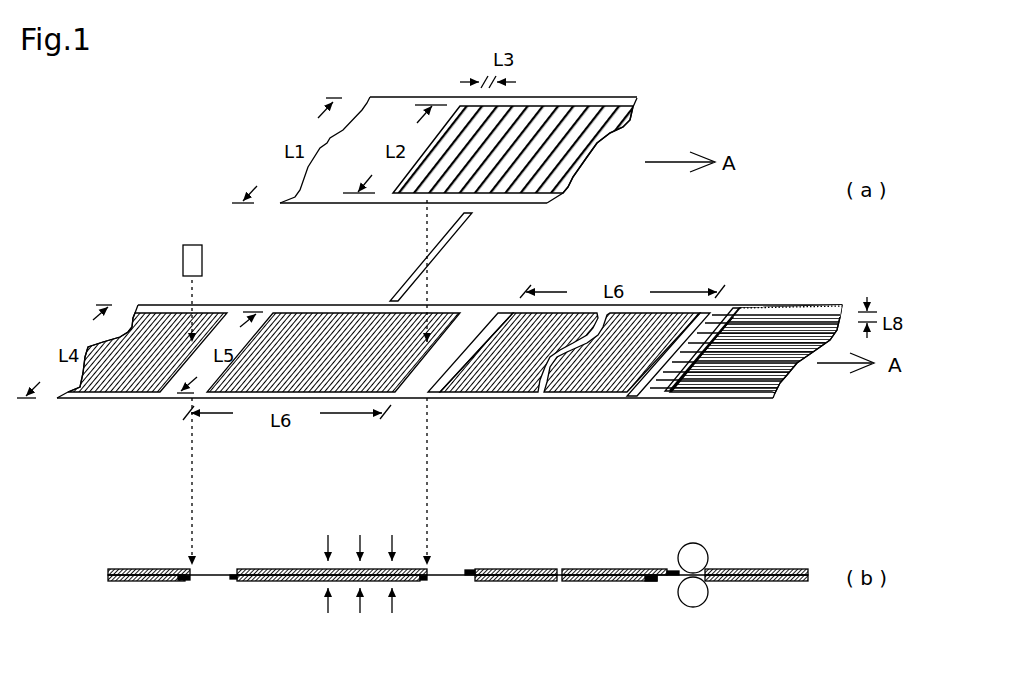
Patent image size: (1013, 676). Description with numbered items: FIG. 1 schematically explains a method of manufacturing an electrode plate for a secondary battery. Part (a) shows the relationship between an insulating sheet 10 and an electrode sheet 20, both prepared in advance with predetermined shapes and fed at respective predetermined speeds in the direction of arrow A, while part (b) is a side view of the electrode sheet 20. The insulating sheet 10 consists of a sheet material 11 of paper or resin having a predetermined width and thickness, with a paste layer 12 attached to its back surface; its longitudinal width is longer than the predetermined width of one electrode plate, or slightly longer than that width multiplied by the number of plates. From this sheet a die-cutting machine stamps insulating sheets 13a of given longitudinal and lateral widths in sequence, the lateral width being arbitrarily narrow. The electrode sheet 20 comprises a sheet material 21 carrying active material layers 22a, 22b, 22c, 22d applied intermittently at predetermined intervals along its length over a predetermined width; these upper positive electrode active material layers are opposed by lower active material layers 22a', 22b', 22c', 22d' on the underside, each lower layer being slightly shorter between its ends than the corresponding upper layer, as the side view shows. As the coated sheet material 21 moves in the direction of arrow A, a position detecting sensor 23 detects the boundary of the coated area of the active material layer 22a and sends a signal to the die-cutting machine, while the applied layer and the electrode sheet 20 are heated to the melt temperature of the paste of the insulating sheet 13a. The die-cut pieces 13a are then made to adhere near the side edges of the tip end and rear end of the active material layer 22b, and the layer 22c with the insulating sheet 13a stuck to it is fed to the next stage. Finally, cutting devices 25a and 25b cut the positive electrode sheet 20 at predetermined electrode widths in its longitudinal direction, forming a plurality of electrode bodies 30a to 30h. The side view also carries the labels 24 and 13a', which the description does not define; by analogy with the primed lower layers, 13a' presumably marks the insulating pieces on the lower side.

The insulating sheet 10 is at (423, 78).
The sheet material 11 is at (542, 96).
The paste layer 12 is at (568, 191).
The insulating sheet 13a is at (560, 319).
The electrode sheet 20 is at (320, 266).
The sheet material 21 is at (223, 304).
The active material layer 22a is at (147, 421).
The active material layer 22b is at (333, 424).
The active material layer 22c is at (570, 444).
The active material layer 22d is at (756, 440).
The position detecting sensor 23 is at (187, 247).
The pressing direction 24 is at (318, 608).
The cutting device 25a is at (705, 552).
The cutting device 25b is at (705, 604).
The electrode body 30a is at (824, 309).
The electrode body 30h is at (792, 392).
The lower active material layer 22a' is at (140, 598).
The lower active material layer 22b' is at (328, 598).
The lower active material layer 22c' is at (566, 598).
The lower active material layer 22d' is at (767, 592).
The lower cut strip 13a' is at (423, 600).